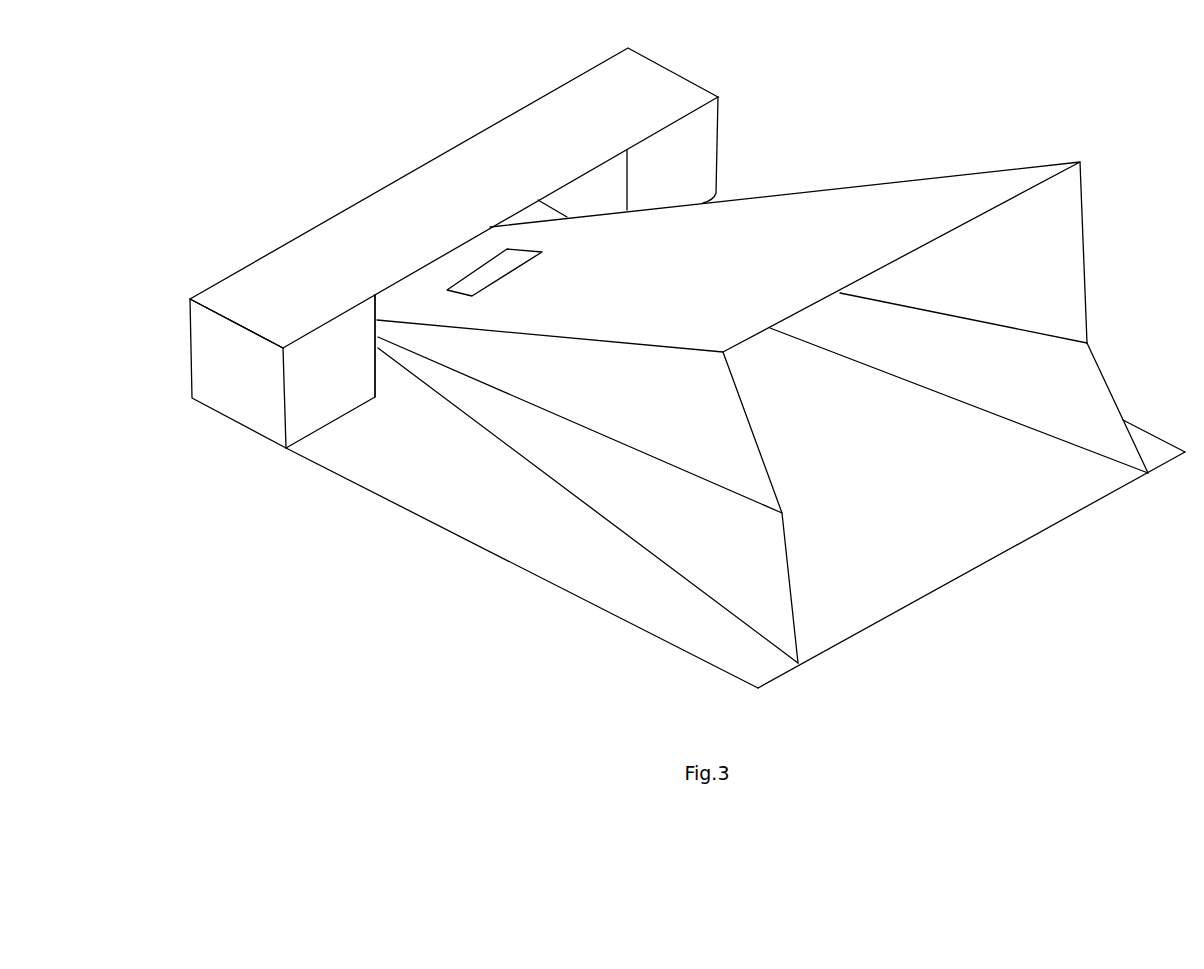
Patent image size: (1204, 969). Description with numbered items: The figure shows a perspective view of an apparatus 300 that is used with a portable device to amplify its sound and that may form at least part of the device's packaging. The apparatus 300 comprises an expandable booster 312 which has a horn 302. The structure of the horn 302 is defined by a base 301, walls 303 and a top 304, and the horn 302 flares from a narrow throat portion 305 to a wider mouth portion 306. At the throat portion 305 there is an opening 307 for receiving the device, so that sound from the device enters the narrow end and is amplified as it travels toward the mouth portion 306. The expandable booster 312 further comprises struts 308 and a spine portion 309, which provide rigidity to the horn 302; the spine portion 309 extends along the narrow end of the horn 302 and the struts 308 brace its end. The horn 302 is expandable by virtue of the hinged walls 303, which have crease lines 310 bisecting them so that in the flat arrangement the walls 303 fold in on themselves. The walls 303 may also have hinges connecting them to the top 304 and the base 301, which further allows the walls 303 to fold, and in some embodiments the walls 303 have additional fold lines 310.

The apparatus 300 is at (259, 501).
The base 301 is at (582, 582).
The horn 302 is at (1102, 261).
The walls 303 is at (782, 626).
The top 304 is at (910, 190).
The throat portion 305 is at (400, 305).
The mouth portion 306 is at (945, 556).
The opening 307 is at (493, 252).
The struts 308 is at (700, 142).
The spine portion 309 is at (232, 290).
The crease lines 310 is at (742, 497).
The expandable booster 312 is at (530, 463).